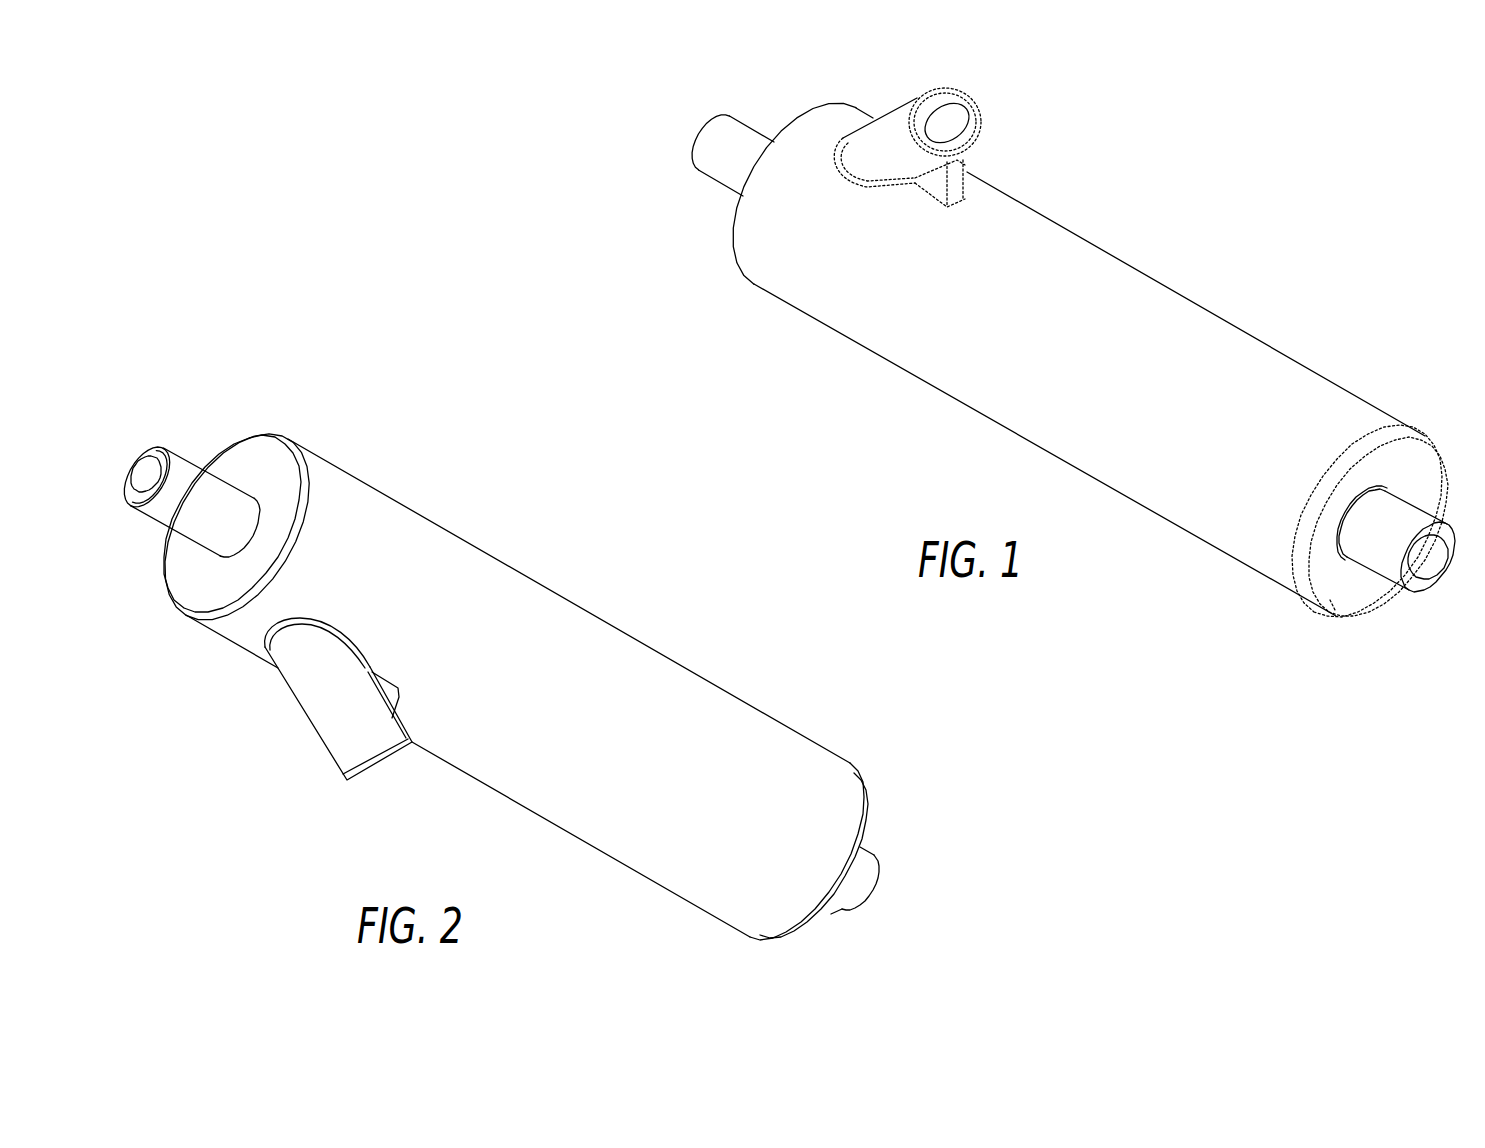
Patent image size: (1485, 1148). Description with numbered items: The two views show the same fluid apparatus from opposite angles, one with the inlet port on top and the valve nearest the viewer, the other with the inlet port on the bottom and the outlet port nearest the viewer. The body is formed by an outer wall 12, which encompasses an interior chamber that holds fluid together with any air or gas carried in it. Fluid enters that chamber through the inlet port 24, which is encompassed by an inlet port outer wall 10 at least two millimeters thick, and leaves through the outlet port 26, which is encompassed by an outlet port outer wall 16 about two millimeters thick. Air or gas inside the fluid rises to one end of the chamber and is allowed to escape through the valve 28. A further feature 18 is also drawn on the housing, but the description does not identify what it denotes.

In FIG. 1, the inlet port outer wall 10 is at (905, 112).
In FIG. 2, the inlet port outer wall 10 is at (307, 718).
In FIG. 1, the outer wall 12 is at (1047, 365).
In FIG. 2, the outer wall 12 is at (542, 642).
In FIG. 1, the outlet port outer wall 16 is at (748, 126).
In FIG. 2, the outlet port outer wall 16 is at (186, 468).
In FIG. 1, the outlet port 18 is at (1380, 578).
In FIG. 2, the outlet port 18 is at (883, 838).
In FIG. 1, the inlet port 24 is at (940, 128).
In FIG. 2, the outlet port 26 is at (147, 475).
In FIG. 1, the valve 28 is at (1413, 547).